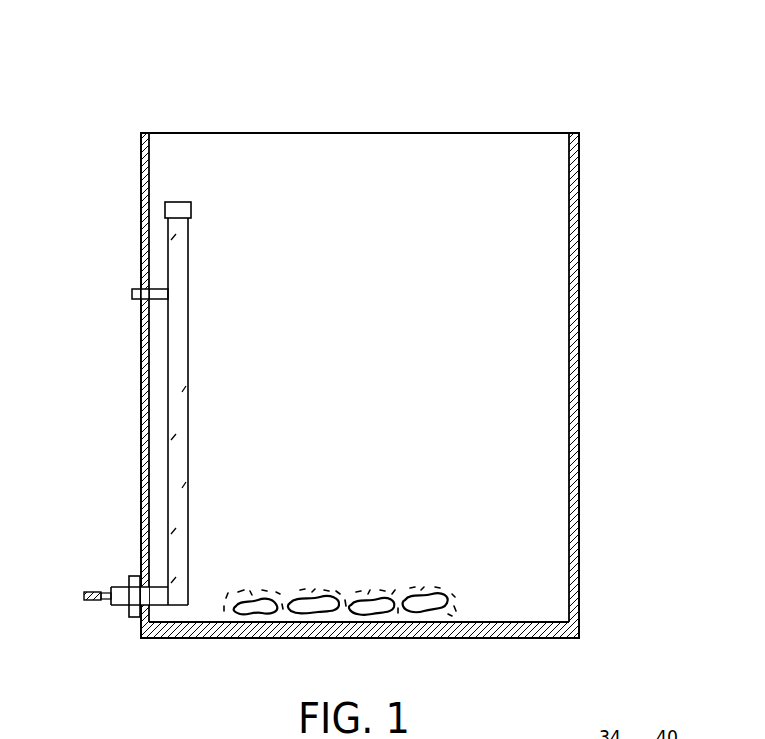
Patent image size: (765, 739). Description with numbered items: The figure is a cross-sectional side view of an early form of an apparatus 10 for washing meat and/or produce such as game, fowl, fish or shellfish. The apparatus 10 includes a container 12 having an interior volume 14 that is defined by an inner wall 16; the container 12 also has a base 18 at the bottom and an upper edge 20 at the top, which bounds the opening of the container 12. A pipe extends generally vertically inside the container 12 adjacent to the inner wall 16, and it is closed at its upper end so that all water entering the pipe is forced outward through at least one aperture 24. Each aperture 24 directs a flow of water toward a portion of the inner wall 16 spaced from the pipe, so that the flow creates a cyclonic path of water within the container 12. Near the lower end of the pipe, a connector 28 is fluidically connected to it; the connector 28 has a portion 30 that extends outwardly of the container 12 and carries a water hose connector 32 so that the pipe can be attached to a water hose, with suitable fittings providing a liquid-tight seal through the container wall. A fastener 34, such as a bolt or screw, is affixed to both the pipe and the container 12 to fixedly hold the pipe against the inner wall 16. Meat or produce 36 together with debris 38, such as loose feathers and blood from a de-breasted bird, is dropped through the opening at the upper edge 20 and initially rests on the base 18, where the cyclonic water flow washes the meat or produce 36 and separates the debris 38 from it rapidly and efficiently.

The apparatus 10 is at (613, 179).
The container 12 is at (580, 307).
The interior volume 14 is at (358, 356).
The inner wall 16 is at (568, 448).
The base 18 is at (513, 639).
The upper edge 20 is at (285, 132).
The aperture 24 is at (183, 291).
The connector 28 is at (121, 604).
The portion 30 is at (126, 579).
The water hose connector 32 is at (86, 591).
The fastener 34 is at (153, 301).
The meat or produce 36 is at (318, 594).
The debris 38 is at (397, 590).